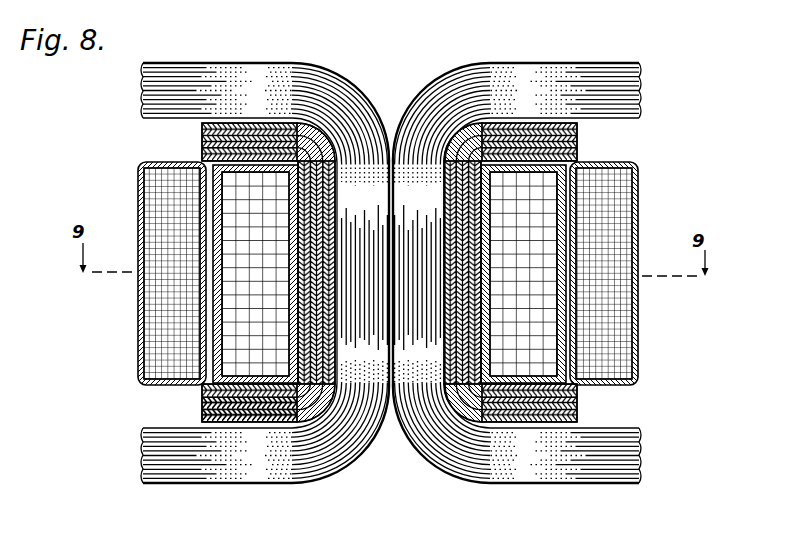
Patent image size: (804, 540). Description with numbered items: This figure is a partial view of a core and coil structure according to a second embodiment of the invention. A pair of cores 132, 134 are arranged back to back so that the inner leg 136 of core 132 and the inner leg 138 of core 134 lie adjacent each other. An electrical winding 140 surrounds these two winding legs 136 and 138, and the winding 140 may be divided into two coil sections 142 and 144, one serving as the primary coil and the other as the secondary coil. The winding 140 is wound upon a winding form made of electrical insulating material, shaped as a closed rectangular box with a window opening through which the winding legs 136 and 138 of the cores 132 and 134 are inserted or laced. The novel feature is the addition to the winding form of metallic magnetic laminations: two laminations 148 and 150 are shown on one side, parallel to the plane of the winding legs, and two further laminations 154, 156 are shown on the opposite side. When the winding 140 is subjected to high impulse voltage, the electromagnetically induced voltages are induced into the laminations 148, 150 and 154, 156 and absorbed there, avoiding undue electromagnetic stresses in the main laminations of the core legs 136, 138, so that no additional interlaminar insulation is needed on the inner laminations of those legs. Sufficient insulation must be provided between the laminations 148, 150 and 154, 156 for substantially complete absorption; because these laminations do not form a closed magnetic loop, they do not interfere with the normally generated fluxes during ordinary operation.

The core 132 is at (273, 80).
The core 134 is at (533, 75).
The inner leg 136 is at (358, 192).
The inner leg 138 is at (412, 193).
The electrical winding 140 is at (287, 363).
The coil section 142 is at (215, 175).
The coil section 144 is at (157, 329).
The lamination 148 is at (200, 395).
The lamination 150 is at (200, 410).
The lamination 154 is at (578, 414).
The lamination 156 is at (580, 397).